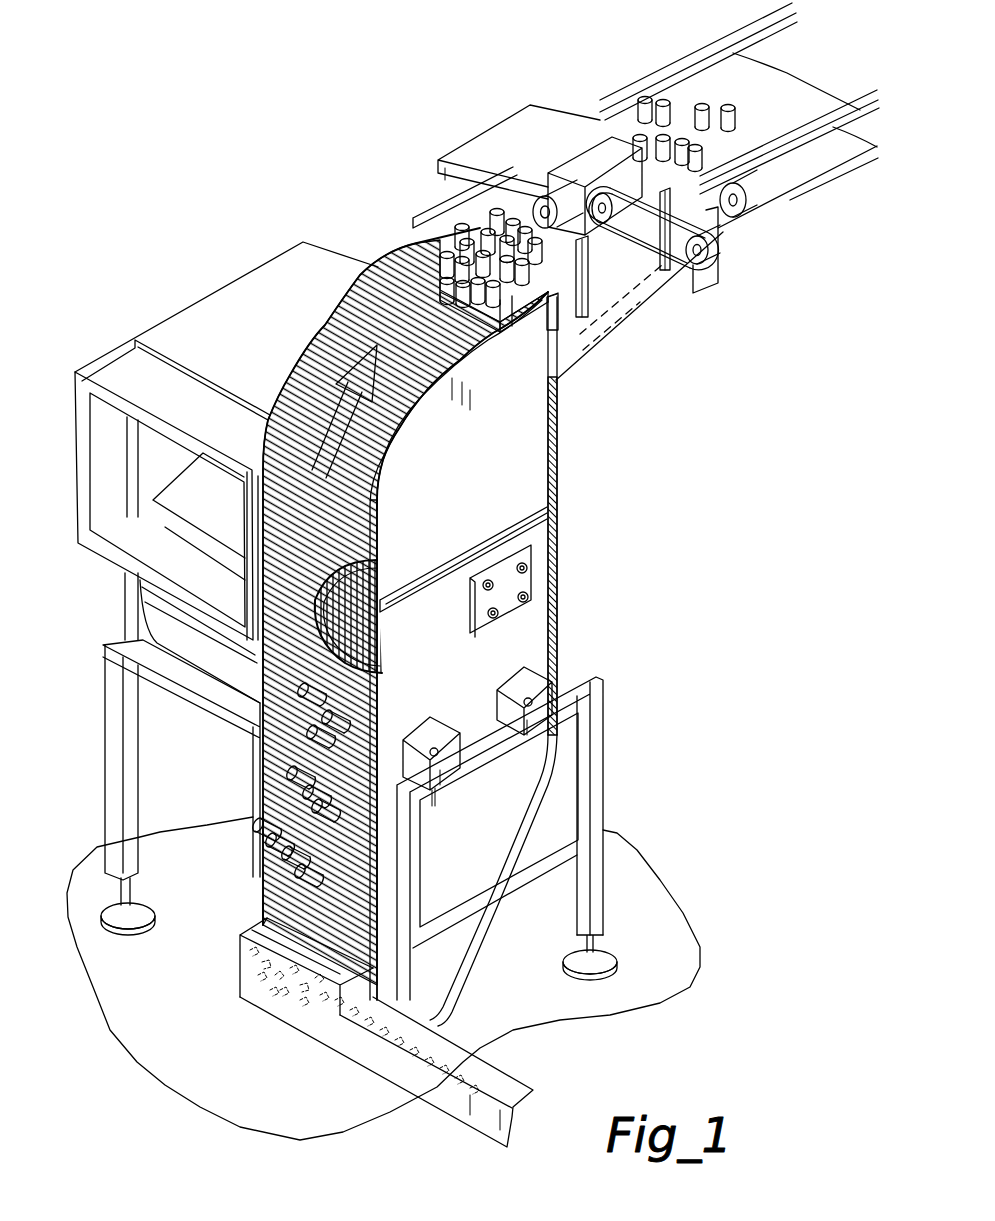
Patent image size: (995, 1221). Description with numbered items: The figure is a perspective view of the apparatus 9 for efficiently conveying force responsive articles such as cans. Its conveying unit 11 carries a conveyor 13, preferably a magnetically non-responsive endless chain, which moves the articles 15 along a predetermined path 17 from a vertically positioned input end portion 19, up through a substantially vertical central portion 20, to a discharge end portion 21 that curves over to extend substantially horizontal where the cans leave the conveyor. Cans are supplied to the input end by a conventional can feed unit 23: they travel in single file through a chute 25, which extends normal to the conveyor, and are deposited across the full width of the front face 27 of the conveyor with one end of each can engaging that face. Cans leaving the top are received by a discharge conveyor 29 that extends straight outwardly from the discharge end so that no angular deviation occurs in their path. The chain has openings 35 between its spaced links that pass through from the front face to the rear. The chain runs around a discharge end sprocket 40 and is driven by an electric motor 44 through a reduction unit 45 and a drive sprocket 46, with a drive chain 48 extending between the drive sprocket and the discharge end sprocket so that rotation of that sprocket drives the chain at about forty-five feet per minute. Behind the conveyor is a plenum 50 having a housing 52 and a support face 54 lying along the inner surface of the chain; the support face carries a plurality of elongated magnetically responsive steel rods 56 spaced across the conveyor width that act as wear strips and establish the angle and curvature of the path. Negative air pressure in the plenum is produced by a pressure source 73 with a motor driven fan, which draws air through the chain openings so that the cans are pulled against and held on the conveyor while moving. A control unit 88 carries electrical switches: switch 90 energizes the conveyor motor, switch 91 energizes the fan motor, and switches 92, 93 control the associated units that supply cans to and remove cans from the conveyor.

The apparatus 9 is at (245, 192).
The conveying unit 11 is at (378, 235).
The conveyor 13 is at (437, 362).
The articles 15 is at (290, 780).
The predetermined path 17 is at (390, 445).
The input end portion 19 is at (273, 897).
The central portion 20 is at (373, 500).
The discharge end portion 21 is at (508, 313).
The can feed unit 23 is at (240, 968).
The chute 25 is at (370, 1067).
The front face 27 is at (267, 907).
The discharge conveyor 29 is at (738, 83).
The openings 35 is at (312, 363).
The discharge end sprocket 40 is at (702, 255).
The electric motor 44 is at (558, 195).
The reduction unit 45 is at (563, 193).
The drive sprocket 46 is at (602, 192).
The drive chain 48 is at (648, 237).
The plenum 50 is at (527, 470).
The housing 52 is at (545, 407).
The support face 54 is at (383, 580).
The metallic rods 56 is at (360, 640).
The pressure source 73 is at (148, 613).
The control unit 88 is at (472, 608).
The electrical switch 90 is at (490, 580).
The electrical switch 91 is at (527, 567).
The electrical switch 92 is at (488, 620).
The electrical switch 93 is at (530, 593).